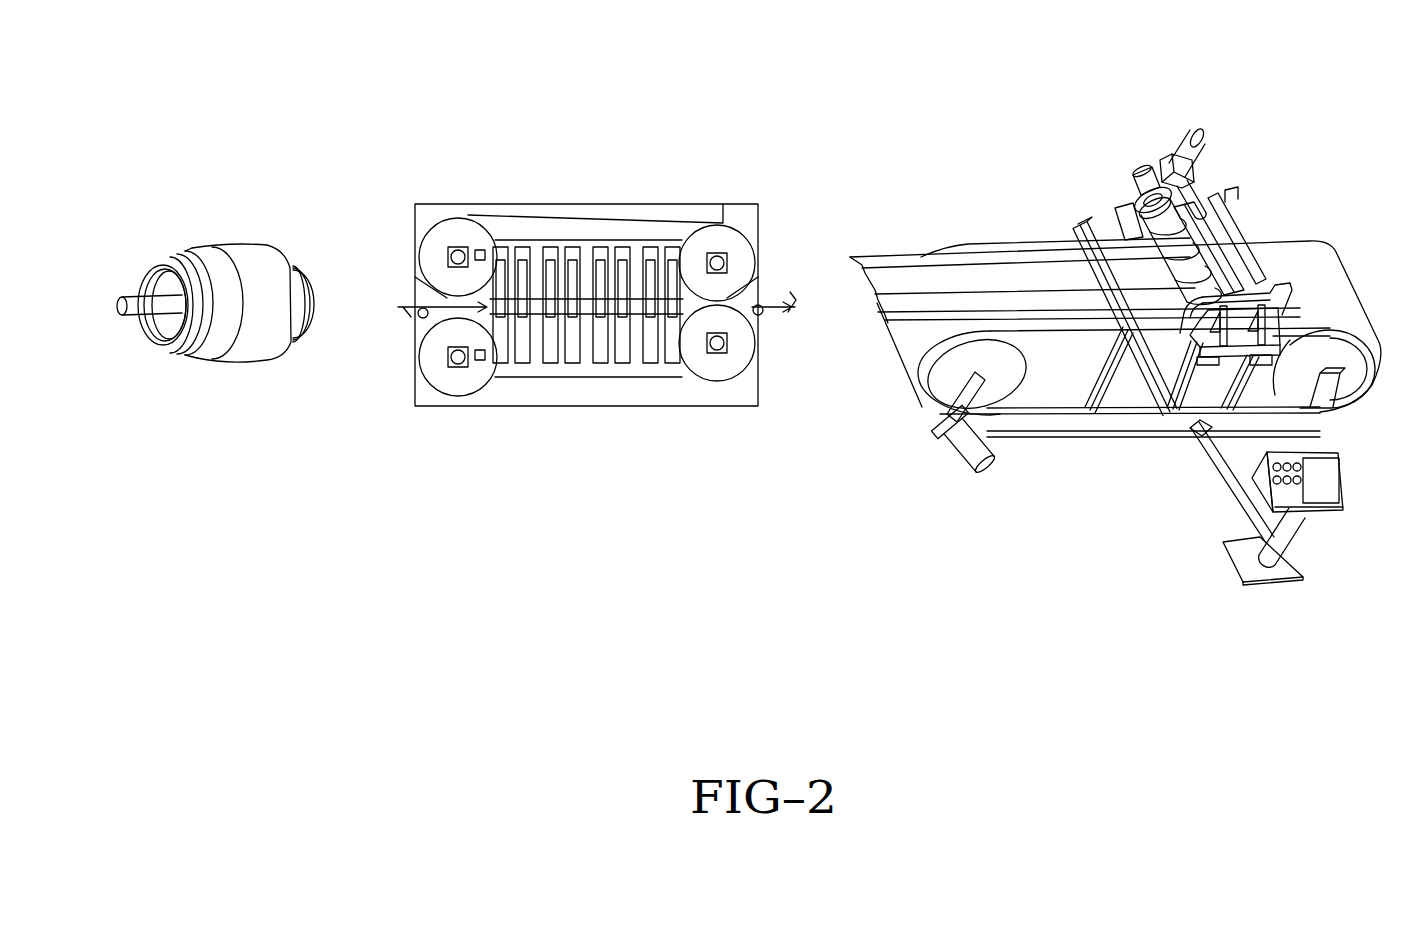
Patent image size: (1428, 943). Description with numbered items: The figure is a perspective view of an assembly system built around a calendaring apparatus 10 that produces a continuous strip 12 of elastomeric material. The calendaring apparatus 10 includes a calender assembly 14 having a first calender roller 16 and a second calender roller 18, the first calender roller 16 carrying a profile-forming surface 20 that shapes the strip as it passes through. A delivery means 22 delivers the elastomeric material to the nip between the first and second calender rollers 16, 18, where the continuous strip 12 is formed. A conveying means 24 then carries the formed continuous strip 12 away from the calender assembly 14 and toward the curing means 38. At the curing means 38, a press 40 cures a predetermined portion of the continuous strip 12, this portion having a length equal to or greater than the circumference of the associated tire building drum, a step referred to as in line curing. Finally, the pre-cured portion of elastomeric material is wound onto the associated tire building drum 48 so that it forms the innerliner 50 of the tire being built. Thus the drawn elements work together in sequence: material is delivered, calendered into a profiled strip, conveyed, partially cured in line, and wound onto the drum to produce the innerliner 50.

The calendaring apparatus 10 is at (1310, 127).
The continuous strip 12 is at (887, 273).
The calender assembly 14 is at (1225, 253).
The first calender roller 16 is at (1116, 197).
The second calender roller 18 is at (1242, 230).
The profile-forming surface 20 is at (1215, 275).
The delivery means 22 is at (1197, 137).
The conveying means 24 is at (878, 311).
The curing means 38 is at (478, 150).
The press 40 is at (562, 226).
The tire building drum 48 is at (172, 347).
The innerliner 50 is at (238, 252).